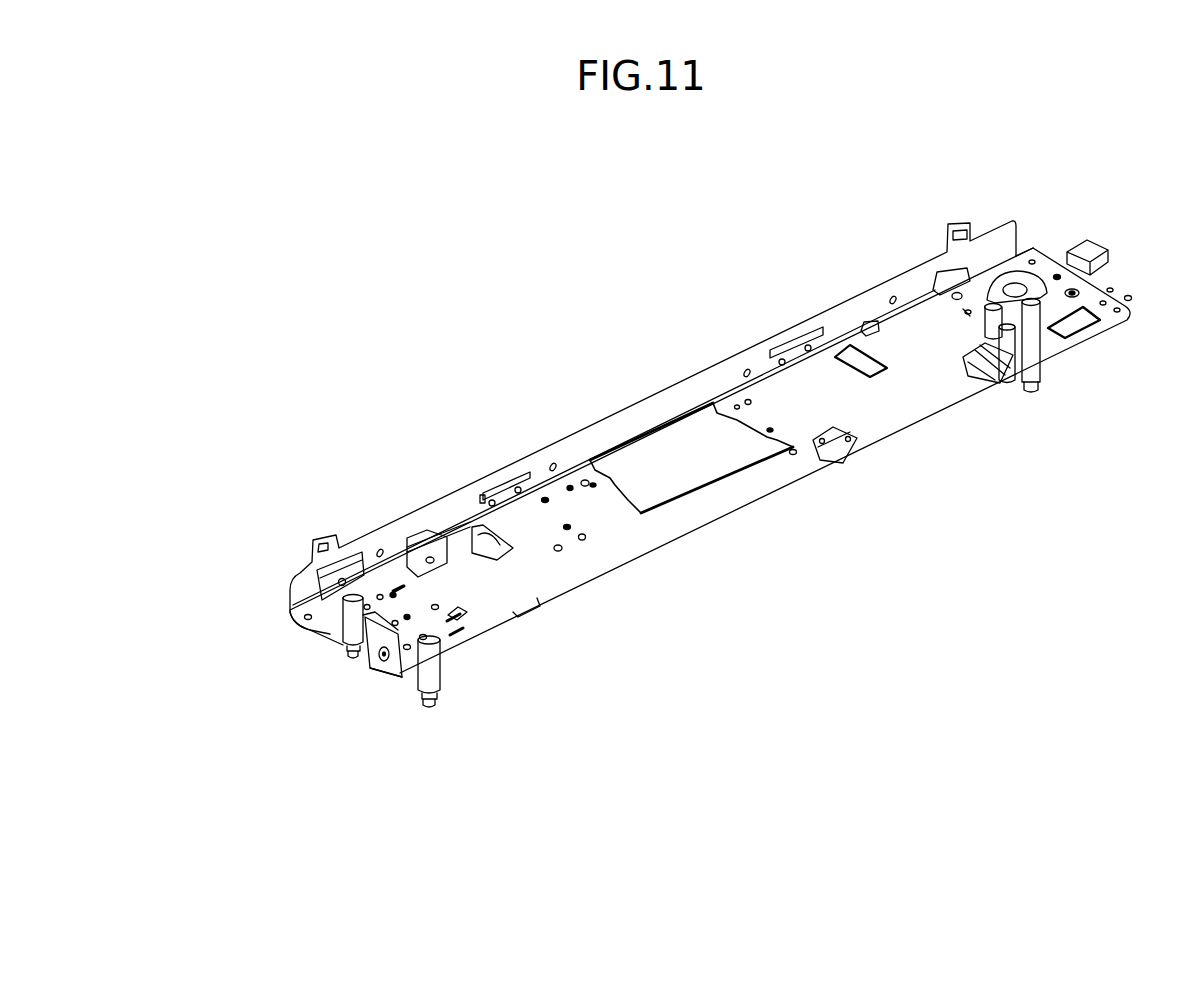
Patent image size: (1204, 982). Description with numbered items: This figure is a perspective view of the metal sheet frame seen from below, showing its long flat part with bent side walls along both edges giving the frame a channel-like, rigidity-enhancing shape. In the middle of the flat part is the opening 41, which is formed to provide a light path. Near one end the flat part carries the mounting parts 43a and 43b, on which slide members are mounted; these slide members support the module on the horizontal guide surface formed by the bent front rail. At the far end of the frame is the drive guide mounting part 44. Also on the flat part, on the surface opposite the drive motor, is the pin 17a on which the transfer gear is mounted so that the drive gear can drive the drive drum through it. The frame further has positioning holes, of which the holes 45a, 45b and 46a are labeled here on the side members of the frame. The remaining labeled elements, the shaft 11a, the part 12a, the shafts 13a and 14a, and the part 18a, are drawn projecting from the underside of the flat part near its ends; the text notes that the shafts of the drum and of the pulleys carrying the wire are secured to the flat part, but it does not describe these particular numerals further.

The shaft 11a is at (1030, 390).
The motor 12a is at (368, 672).
The guide pin 13a is at (433, 710).
The guide pin 14a is at (347, 660).
The pin 17a is at (1003, 380).
The gear bracket 18a is at (977, 373).
The opening 41 is at (685, 473).
The mounting part 43a is at (400, 678).
The mounting part 43b is at (308, 618).
The drive guide mounting part 44 is at (1063, 227).
The positioning hole 45a is at (400, 587).
The positioning projection 45b is at (455, 610).
The hole 46a is at (977, 298).